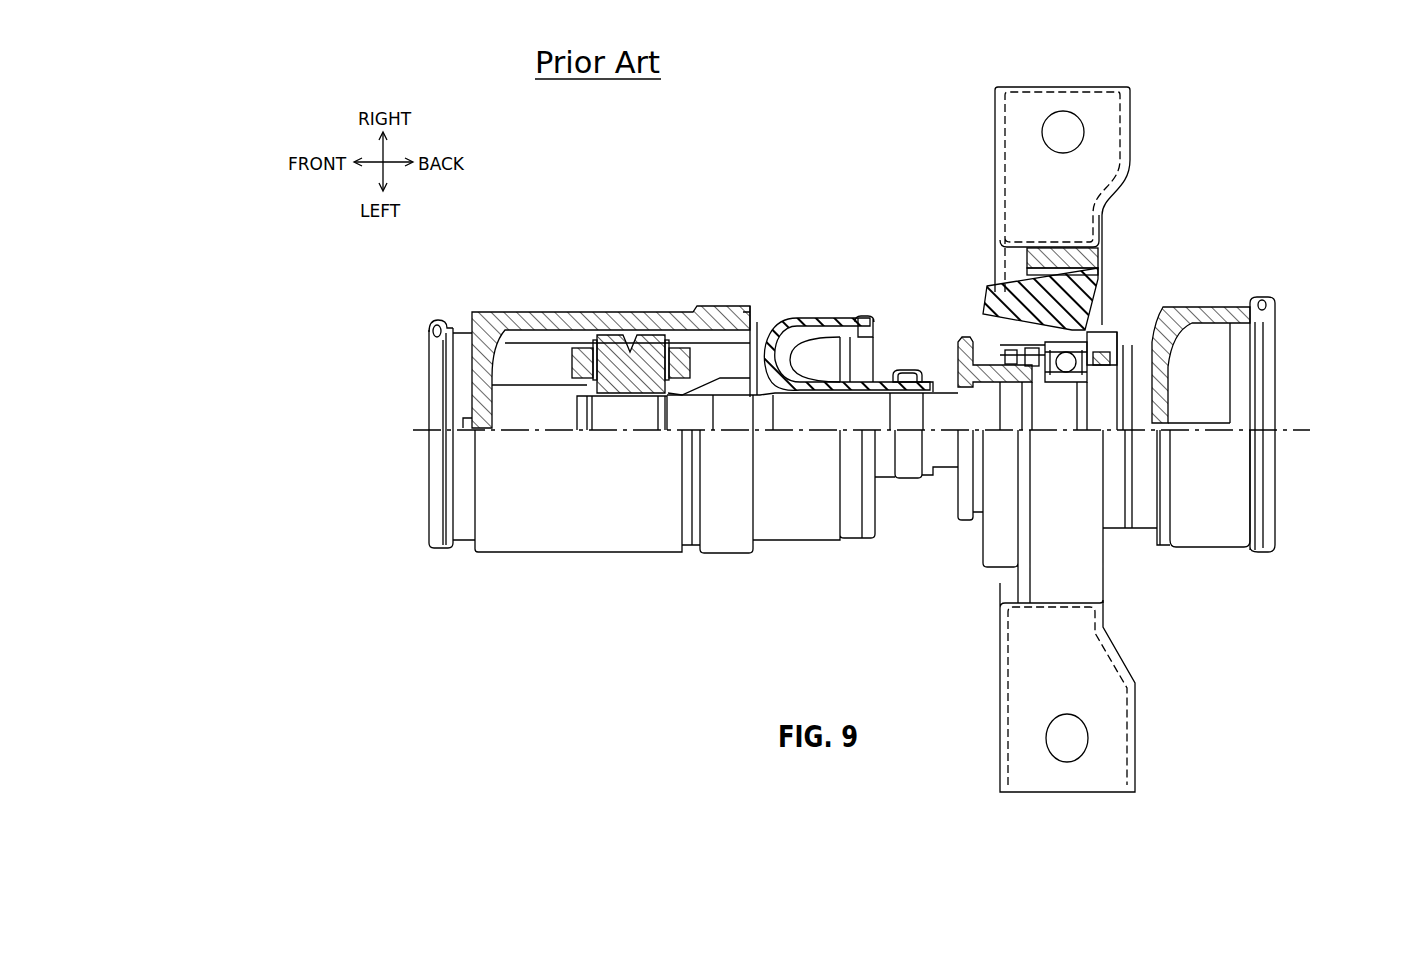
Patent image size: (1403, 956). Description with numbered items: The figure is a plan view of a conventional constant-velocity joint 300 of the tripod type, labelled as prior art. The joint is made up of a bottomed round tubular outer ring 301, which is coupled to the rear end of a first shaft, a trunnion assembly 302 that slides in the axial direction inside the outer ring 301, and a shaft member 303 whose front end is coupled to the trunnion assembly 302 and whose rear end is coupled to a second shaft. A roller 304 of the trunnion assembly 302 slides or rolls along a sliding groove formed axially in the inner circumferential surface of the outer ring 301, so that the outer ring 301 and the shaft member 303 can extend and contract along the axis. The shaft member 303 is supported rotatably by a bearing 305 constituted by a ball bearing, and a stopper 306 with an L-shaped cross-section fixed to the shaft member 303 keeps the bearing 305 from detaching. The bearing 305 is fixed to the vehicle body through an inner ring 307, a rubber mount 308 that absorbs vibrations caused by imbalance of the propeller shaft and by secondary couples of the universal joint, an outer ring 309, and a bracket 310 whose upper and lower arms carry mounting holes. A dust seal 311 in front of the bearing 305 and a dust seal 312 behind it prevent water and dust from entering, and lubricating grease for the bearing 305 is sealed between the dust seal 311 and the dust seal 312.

The constant-velocity joint 300 is at (690, 233).
The outer ring 301 is at (585, 312).
The trunnion assembly 302 is at (673, 333).
The shaft member 303 is at (946, 460).
The roller 304 is at (570, 364).
The bearing 305 is at (1068, 340).
The stopper 306 is at (1000, 382).
The inner ring 307 is at (1162, 310).
The mount 308 is at (998, 280).
The outer ring 309 is at (1095, 263).
The bracket 310 is at (1130, 118).
The dust seal 311 is at (1010, 342).
The dust seal 312 is at (1108, 350).